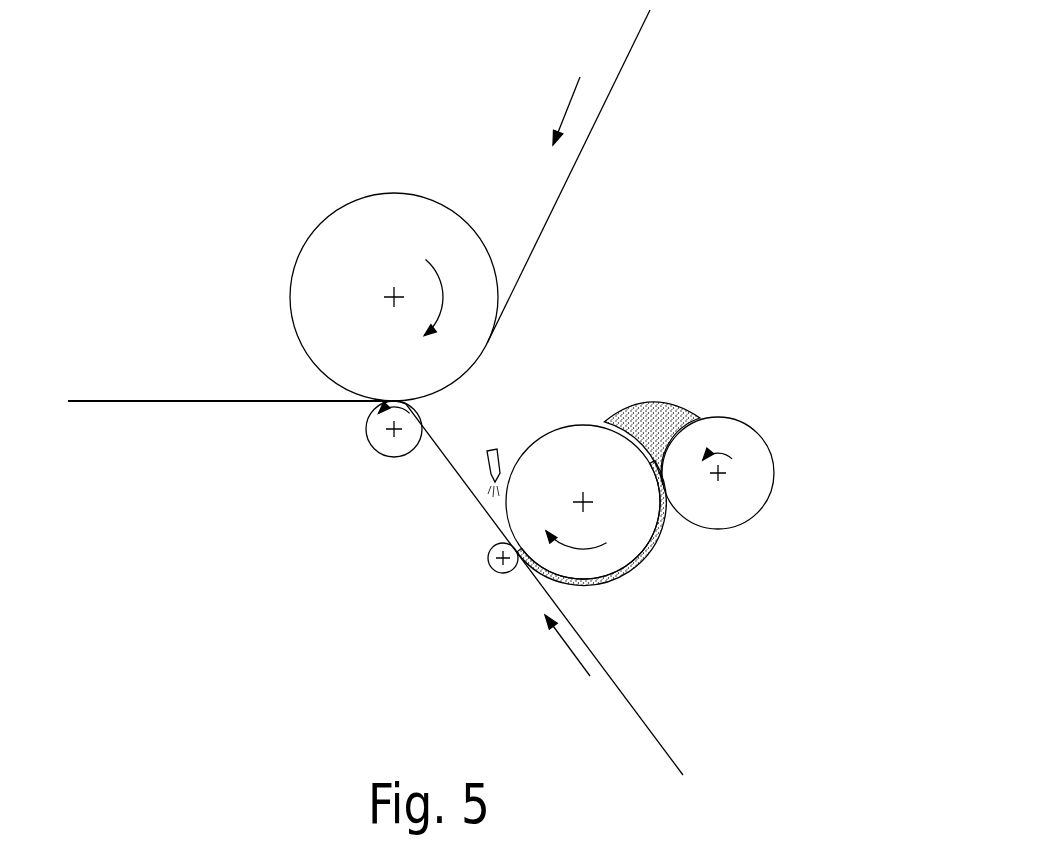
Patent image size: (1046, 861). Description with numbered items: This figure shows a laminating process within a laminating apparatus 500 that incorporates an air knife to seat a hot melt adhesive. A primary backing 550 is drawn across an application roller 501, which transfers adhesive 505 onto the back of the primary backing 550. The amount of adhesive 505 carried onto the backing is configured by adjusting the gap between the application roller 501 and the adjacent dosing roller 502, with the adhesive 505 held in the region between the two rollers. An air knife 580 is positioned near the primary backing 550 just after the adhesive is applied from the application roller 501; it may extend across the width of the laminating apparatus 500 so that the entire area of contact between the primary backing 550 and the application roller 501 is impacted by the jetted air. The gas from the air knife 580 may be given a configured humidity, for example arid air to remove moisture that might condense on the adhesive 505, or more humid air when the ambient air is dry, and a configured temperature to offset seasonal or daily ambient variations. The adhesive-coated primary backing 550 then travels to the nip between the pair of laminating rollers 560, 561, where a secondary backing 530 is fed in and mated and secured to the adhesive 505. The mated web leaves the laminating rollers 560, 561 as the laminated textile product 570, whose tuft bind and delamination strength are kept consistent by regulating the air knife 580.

The laminating apparatus 500 is at (258, 105).
The application roller 501 is at (627, 533).
The dosing roller 502 is at (752, 492).
The adhesive 505 is at (673, 410).
The secondary backing 530 is at (633, 28).
The primary backing 550 is at (635, 706).
The laminating roller 560 is at (312, 265).
The laminating roller 561 is at (377, 442).
The laminated textile product 570 is at (158, 400).
The air knife 580 is at (491, 449).